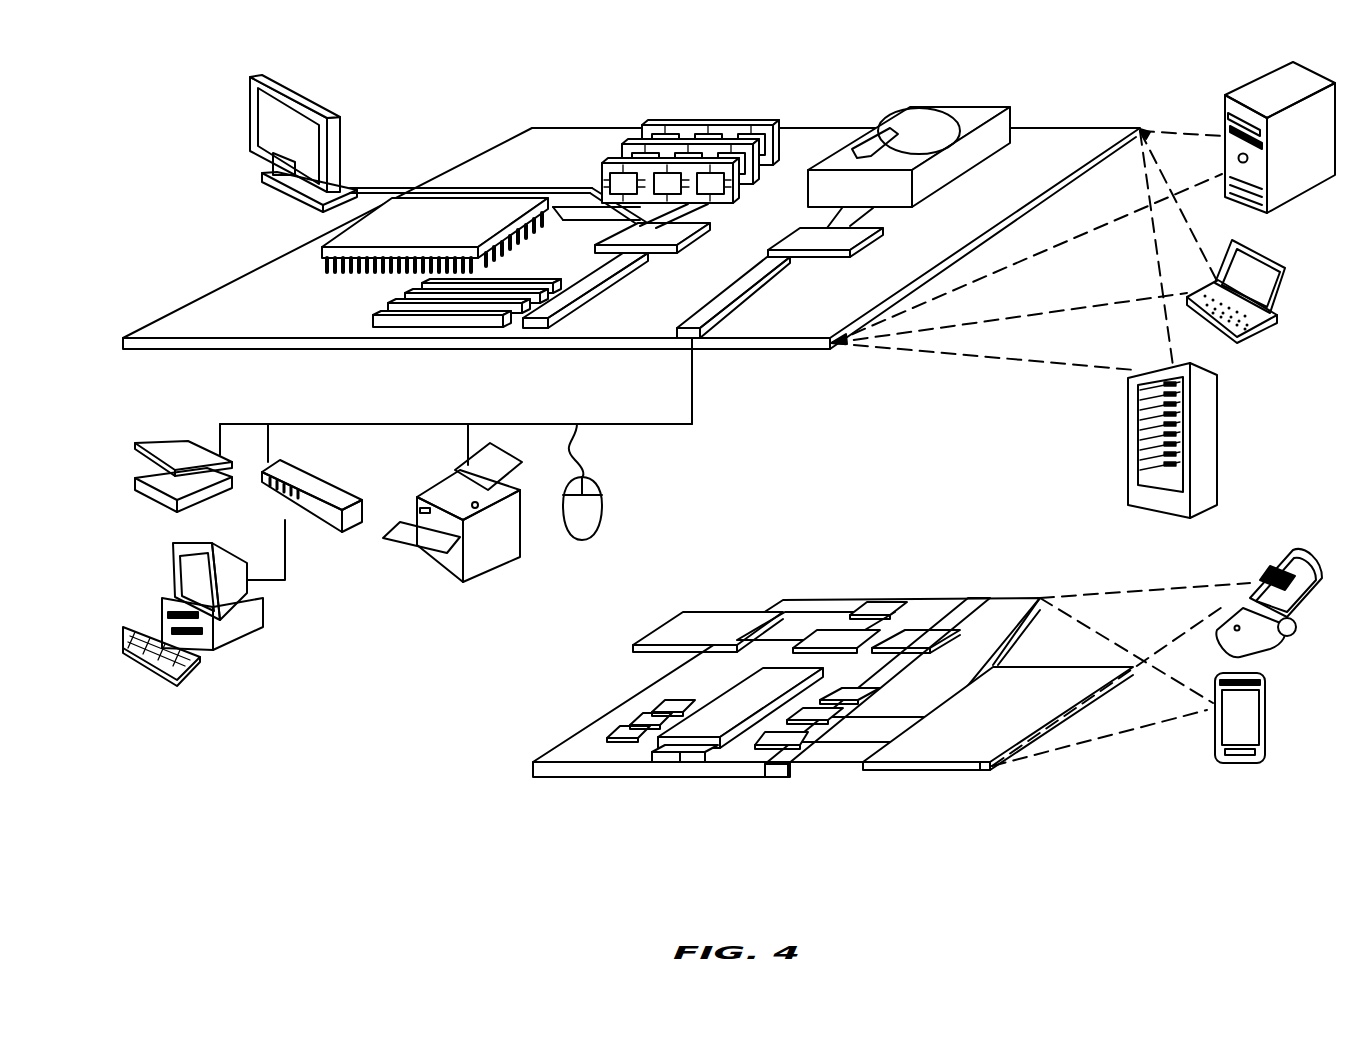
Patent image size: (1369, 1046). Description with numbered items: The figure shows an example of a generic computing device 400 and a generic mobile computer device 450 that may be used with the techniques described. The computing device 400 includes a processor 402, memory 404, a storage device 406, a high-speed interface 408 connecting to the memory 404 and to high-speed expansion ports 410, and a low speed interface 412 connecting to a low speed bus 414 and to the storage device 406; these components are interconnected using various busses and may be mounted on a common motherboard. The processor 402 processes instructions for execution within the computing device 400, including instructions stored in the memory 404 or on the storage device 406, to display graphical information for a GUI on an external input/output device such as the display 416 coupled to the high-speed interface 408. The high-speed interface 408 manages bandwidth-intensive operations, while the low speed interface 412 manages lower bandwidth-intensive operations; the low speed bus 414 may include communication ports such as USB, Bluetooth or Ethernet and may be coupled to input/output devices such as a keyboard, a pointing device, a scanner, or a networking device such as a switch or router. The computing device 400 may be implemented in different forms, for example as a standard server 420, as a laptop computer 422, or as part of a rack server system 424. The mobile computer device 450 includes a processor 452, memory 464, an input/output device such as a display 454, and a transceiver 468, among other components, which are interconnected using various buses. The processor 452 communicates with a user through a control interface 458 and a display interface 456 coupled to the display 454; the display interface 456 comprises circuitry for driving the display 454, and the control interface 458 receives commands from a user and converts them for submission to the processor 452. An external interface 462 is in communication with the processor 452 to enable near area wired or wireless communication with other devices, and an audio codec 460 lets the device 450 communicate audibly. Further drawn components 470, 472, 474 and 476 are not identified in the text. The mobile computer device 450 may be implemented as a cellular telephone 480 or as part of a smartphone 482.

The computing device 400 is at (450, 99).
The processor 402 is at (326, 251).
The memory 404 is at (665, 124).
The storage device 406 is at (899, 117).
The high-speed interface 408 is at (630, 233).
The high-speed expansion ports 410 is at (400, 307).
The low speed interface 412 is at (808, 234).
The low speed bus 414 is at (702, 339).
The display 416 is at (262, 78).
The standard server 420 is at (1223, 115).
The laptop computer 422 is at (1290, 268).
The rack server system 424 is at (1128, 468).
The mobile computer device 450 is at (512, 772).
The processor 452 is at (712, 735).
The display 454 is at (955, 748).
The display interface 456 is at (790, 745).
The control interface 458 is at (825, 727).
The audio codec 460 is at (850, 699).
The external interface 462 is at (683, 766).
The memory 464 is at (640, 720).
The transceiver 468 is at (918, 639).
The antenna pad 470 is at (890, 604).
The battery plate 472 is at (755, 614).
The power module 474 is at (684, 614).
The transceiver module 476 is at (838, 639).
The cellular telephone 480 is at (1275, 562).
The smartphone 482 is at (1215, 735).